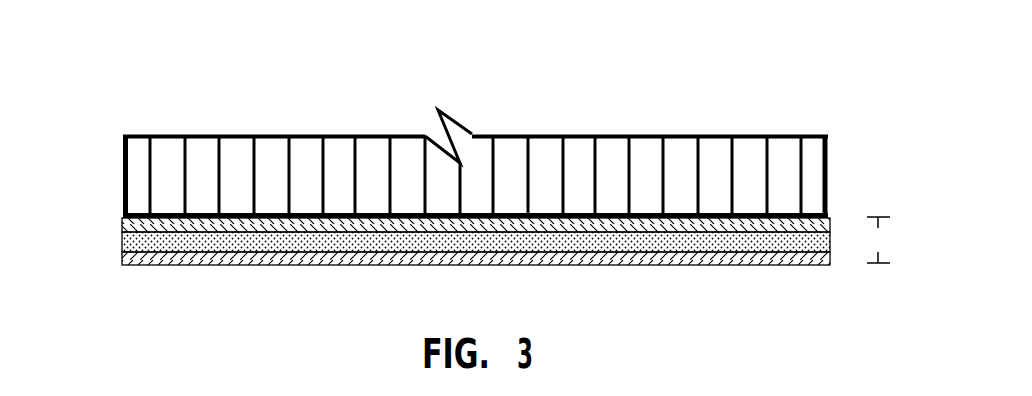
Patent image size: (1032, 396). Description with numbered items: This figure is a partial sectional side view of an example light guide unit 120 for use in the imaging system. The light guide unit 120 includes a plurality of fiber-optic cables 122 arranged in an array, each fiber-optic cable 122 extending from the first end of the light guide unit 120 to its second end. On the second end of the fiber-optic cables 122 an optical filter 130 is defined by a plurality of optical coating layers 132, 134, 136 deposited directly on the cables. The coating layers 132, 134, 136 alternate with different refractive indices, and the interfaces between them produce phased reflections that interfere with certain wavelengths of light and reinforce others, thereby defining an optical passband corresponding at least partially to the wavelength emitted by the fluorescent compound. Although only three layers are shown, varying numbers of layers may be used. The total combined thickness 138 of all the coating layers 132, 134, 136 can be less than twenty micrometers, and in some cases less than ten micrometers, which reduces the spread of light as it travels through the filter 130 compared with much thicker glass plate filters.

The light guide unit 120 is at (829, 137).
The fiber-optic cables 122 is at (767, 189).
The optical filter 130 is at (93, 218).
The optical coating layer 132 is at (120, 222).
The optical coating layer 134 is at (120, 242).
The optical coating layer 136 is at (244, 264).
The total combined thickness 138 is at (879, 240).